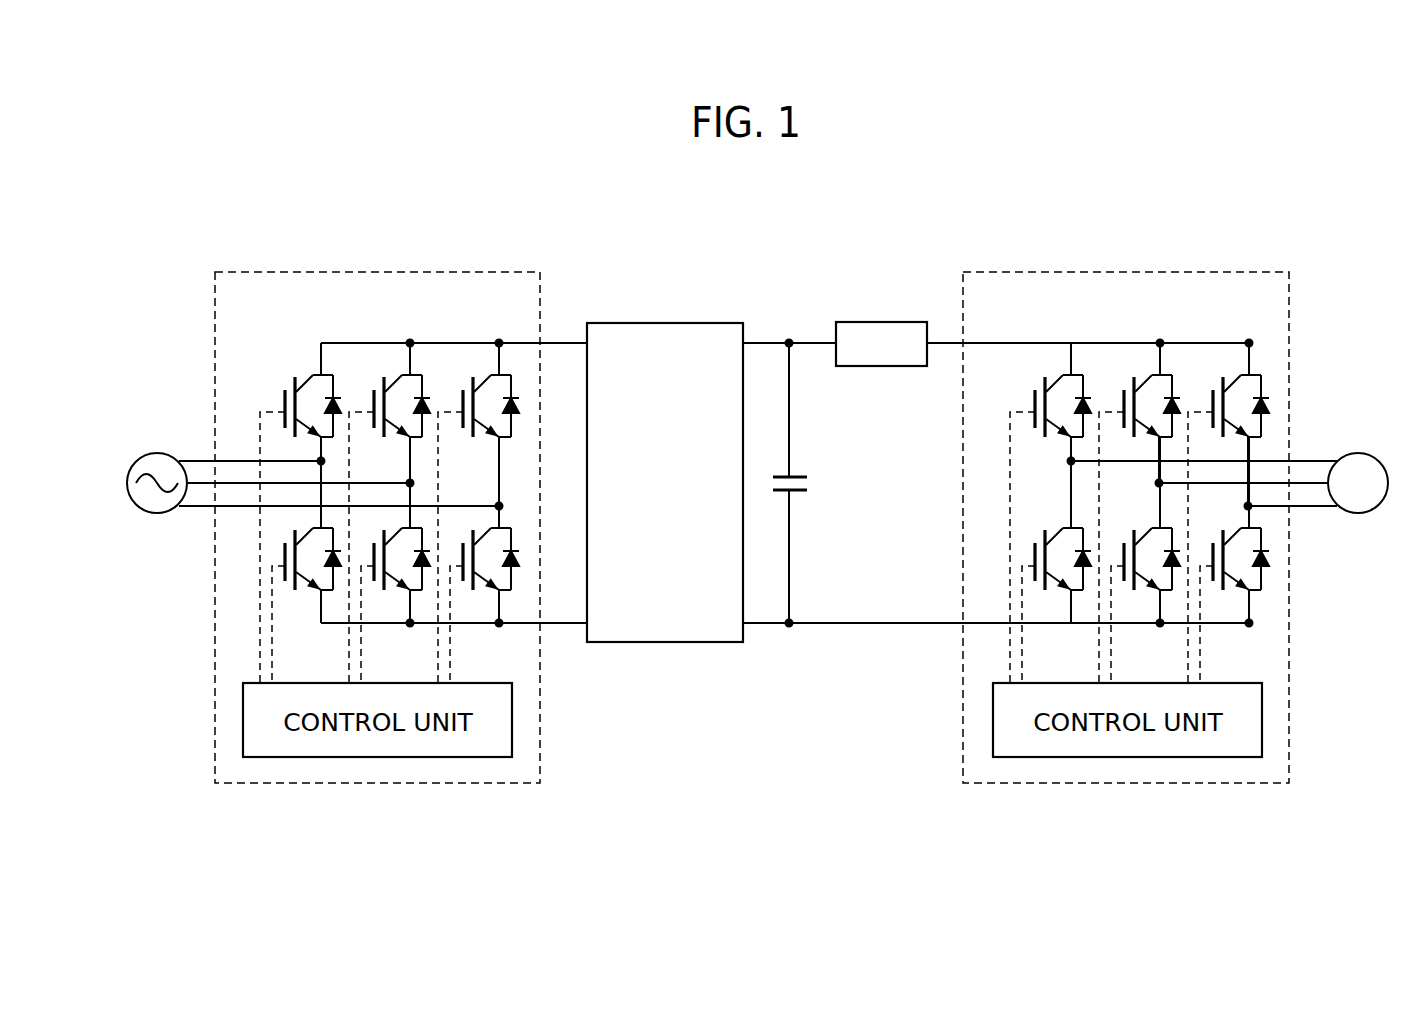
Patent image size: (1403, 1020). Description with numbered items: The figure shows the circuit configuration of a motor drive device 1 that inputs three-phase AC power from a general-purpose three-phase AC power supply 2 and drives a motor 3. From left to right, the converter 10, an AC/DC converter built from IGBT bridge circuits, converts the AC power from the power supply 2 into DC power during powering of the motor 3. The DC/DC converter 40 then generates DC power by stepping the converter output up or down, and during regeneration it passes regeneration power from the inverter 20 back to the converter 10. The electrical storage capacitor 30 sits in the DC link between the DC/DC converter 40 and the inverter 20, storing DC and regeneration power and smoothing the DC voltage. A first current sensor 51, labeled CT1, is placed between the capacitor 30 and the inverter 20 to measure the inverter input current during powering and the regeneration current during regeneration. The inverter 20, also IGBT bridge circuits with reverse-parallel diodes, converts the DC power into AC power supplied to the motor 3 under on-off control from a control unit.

The motor drive device 1 is at (1297, 138).
The three-phase AC power supply 2 is at (144, 457).
The motor 3 is at (1358, 453).
The converter 10 is at (444, 272).
The inverter 20 is at (1194, 272).
The electrical storage capacitor 30 is at (797, 477).
The DC/DC converter 40 is at (697, 323).
The first current sensor 51 is at (869, 322).